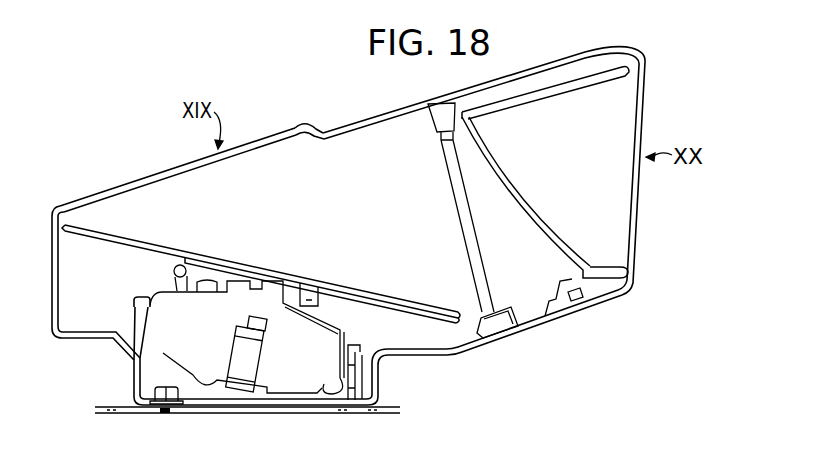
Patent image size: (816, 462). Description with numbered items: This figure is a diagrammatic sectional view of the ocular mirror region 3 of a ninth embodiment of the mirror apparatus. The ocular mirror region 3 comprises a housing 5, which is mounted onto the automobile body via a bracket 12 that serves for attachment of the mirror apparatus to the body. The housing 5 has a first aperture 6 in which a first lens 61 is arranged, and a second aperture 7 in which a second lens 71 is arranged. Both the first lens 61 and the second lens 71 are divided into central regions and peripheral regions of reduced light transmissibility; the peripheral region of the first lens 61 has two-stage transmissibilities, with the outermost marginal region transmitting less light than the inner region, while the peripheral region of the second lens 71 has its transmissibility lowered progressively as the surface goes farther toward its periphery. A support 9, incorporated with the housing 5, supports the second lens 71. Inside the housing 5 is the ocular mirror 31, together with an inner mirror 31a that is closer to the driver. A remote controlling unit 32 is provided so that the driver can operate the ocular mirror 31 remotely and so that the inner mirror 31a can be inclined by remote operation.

The ocular mirror region 3 is at (303, 122).
The housing 5 is at (70, 340).
The first aperture 6 is at (129, 180).
The first lens 61 is at (183, 165).
The second aperture 7 is at (640, 194).
The support 9 is at (624, 70).
The second lens 71 is at (556, 242).
The ocular mirror 31 is at (255, 257).
The inner mirror 31a is at (345, 283).
The remote controlling unit 32 is at (165, 353).
The bracket 12 is at (401, 407).